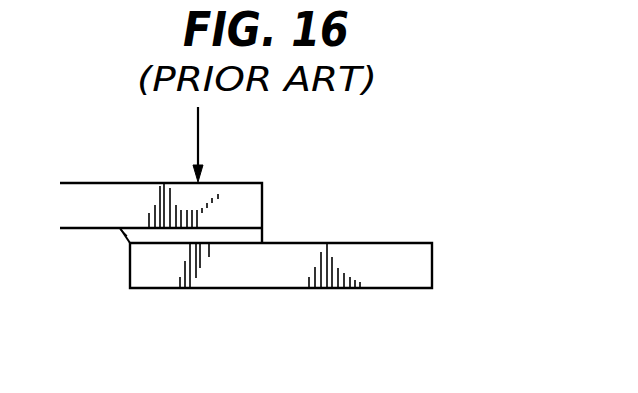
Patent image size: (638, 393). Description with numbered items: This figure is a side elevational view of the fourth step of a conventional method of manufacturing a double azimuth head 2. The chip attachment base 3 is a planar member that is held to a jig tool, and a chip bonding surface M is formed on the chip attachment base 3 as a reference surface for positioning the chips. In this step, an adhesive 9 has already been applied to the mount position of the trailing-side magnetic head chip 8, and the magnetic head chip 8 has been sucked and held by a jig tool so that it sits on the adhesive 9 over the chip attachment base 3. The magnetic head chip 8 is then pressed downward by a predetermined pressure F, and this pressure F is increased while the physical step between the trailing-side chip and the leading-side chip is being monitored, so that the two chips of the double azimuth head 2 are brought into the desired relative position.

The double azimuth head 2 is at (300, 243).
The chip attachment base 3 is at (281, 230).
The magnetic head chip 8 is at (119, 199).
The adhesive 9 is at (137, 238).
The chip bonding surface M is at (330, 258).
The pressure F is at (198, 130).